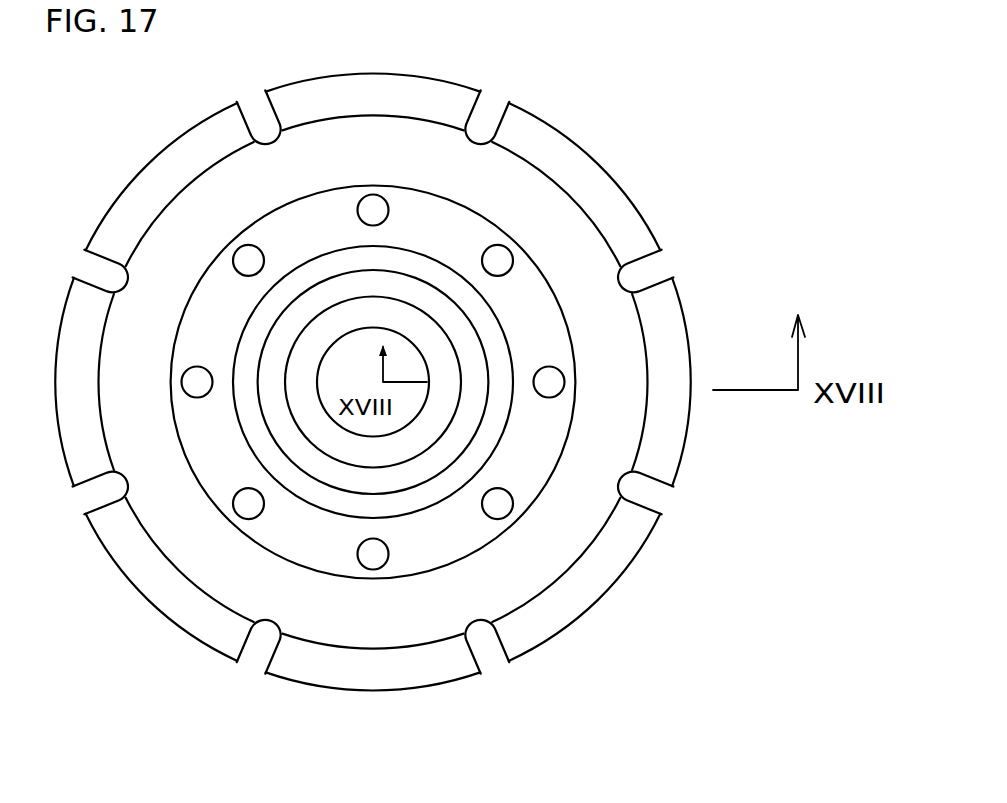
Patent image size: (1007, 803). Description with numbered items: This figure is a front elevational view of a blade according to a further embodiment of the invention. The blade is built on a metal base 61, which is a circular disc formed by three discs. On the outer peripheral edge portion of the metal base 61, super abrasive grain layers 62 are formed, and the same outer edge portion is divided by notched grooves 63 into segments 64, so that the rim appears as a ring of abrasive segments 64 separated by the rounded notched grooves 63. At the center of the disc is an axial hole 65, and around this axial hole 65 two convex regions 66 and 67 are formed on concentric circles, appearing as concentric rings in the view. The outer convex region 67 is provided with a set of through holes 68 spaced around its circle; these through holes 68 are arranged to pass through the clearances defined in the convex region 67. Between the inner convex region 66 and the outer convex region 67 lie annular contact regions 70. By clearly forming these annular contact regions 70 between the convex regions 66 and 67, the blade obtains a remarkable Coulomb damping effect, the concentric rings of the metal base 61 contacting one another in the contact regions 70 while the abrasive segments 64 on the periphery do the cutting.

The metal base 61 is at (518, 190).
The super abrasive grain layers 62 is at (605, 192).
The notched grooves 63 is at (620, 285).
The segments 64 is at (354, 648).
The axial hole 65 is at (318, 370).
The convex region 66 is at (413, 473).
The convex region 67 is at (543, 346).
The through holes 68 is at (562, 393).
The annular contact regions 70 is at (303, 483).